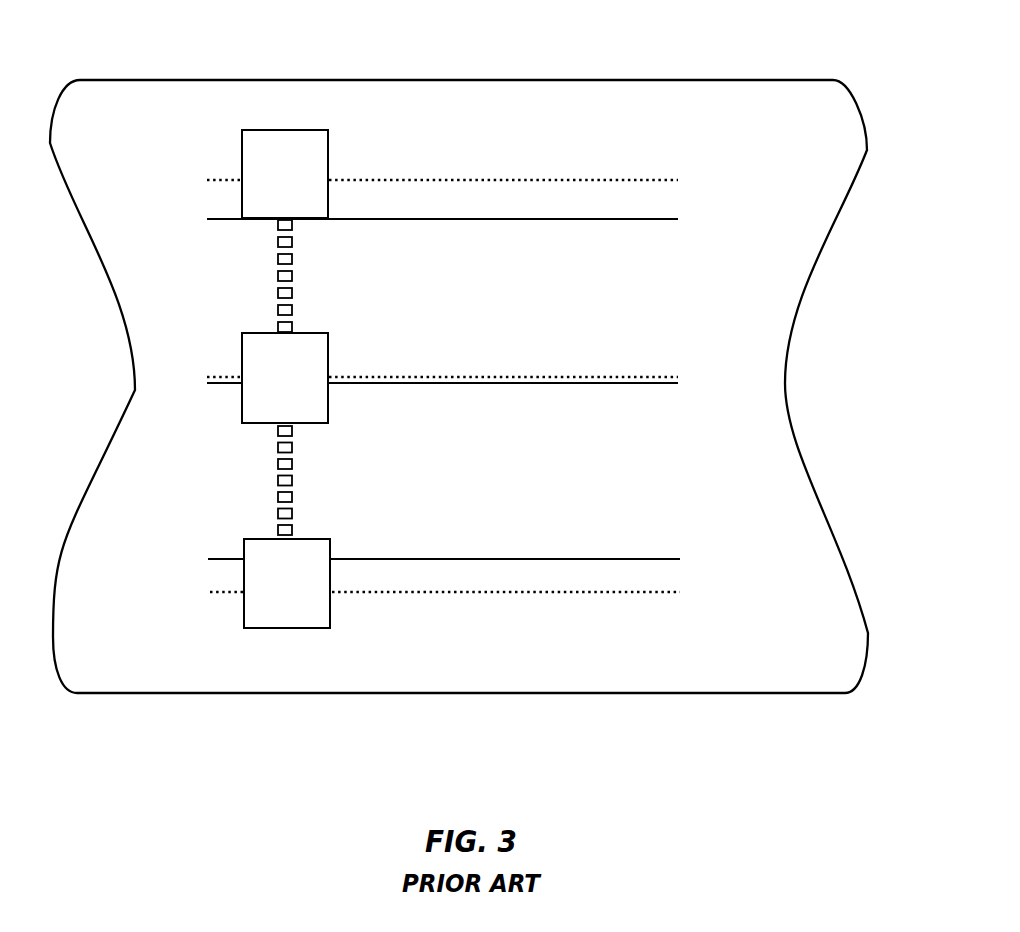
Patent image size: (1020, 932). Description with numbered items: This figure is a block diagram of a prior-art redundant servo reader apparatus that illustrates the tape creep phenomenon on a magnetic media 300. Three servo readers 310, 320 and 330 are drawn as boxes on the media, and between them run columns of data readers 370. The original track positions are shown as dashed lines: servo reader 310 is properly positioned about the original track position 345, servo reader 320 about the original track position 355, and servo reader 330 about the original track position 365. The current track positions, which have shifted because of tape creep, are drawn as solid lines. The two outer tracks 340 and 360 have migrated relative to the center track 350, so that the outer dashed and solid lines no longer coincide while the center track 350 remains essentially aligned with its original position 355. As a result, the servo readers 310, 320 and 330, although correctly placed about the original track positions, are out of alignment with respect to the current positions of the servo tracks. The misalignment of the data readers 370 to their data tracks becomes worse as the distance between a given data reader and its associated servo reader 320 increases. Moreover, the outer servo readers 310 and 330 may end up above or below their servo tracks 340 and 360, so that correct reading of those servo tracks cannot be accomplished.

The magnetic media 300 is at (793, 93).
The servo reader 310 is at (304, 212).
The servo reader 320 is at (304, 415).
The servo reader 330 is at (306, 622).
The outer track 340 is at (647, 221).
The original track position 345 is at (562, 180).
The center track 350 is at (650, 385).
The original track position 355 is at (487, 376).
The outer track 360 is at (490, 558).
The original track position 365 is at (645, 594).
The data readers 370 is at (266, 278).